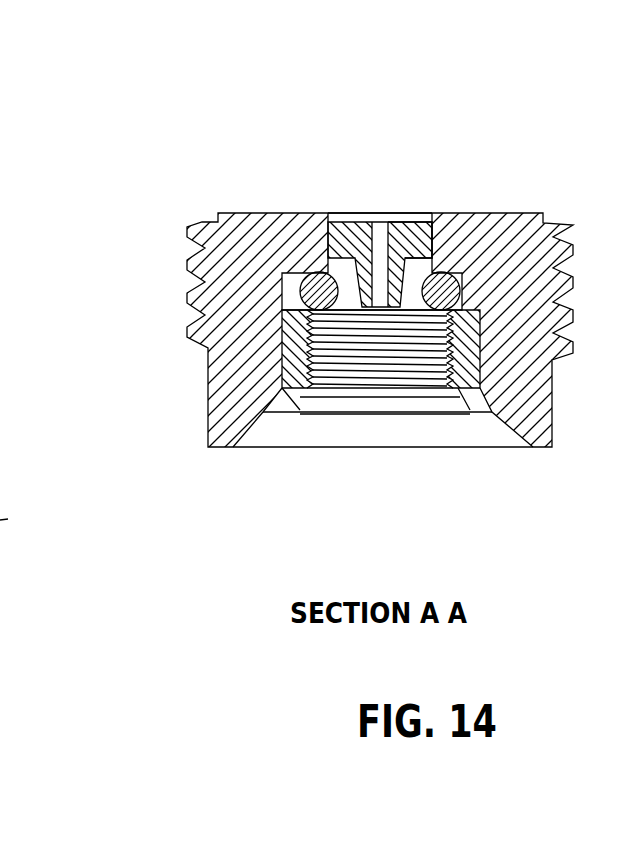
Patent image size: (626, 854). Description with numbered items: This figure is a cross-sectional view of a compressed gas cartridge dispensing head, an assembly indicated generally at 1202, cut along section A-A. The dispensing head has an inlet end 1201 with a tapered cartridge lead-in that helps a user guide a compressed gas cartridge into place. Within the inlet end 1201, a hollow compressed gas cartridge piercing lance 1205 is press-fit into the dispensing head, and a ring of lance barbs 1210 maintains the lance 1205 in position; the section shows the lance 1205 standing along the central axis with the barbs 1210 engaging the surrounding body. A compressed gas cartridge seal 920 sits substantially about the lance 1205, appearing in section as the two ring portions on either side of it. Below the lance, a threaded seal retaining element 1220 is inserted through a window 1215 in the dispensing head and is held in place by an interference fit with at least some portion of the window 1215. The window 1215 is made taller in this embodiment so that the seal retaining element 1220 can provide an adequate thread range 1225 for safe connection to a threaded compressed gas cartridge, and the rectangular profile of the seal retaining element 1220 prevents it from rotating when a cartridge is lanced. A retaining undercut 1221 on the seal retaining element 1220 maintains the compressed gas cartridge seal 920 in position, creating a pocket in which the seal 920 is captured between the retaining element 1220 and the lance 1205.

The compressed gas cartridge seal 920 is at (318, 288).
The inlet end 1201 is at (318, 462).
The cap assembly 1202 is at (402, 187).
The compressed gas cartridge piercing lance 1205 is at (417, 240).
The lance barbs 1210 is at (322, 240).
The window 1215 is at (282, 362).
The seal retaining element 1220 is at (297, 335).
The retaining undercut 1221 is at (455, 312).
The thread range 1225 is at (397, 367).